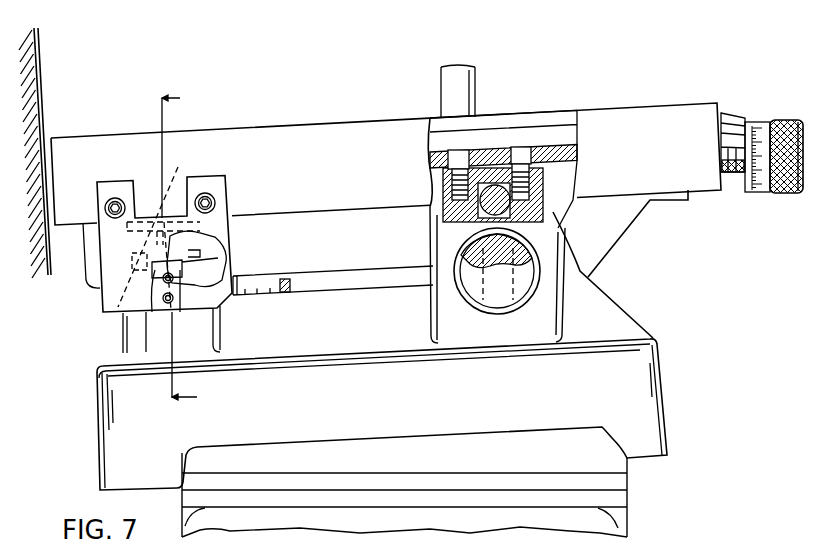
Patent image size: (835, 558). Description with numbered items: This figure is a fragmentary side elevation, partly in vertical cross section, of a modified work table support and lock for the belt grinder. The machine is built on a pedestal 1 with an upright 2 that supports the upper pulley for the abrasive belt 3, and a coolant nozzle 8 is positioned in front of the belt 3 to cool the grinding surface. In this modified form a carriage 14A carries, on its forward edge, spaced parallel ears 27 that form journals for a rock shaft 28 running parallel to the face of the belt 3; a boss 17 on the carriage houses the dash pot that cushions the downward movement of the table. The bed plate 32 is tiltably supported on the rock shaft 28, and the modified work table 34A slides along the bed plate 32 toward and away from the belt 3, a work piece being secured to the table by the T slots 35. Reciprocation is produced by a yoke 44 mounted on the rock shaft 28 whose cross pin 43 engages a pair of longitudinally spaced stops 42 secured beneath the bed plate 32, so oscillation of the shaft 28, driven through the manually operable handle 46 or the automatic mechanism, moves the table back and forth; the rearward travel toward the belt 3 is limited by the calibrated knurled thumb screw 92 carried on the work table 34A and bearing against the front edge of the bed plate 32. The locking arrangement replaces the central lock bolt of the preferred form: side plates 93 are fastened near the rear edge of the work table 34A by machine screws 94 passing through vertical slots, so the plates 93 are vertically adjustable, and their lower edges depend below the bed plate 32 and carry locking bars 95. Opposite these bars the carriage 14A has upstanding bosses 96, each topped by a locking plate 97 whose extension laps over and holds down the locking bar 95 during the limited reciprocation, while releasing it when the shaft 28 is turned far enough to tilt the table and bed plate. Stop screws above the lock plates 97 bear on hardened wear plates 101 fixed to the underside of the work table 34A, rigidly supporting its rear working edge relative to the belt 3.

The pedestal 1 is at (618, 523).
The upright 2 is at (30, 107).
The abrasive belt 3 is at (40, 72).
The nozzle 8 is at (189, 250).
The modified carriage 14A is at (638, 352).
The boss 17 is at (284, 286).
The ears 27 is at (473, 327).
The rock shaft 28 is at (470, 278).
The bed plate 32 is at (652, 200).
The modified work table 34A is at (313, 127).
The T slots 35 is at (437, 123).
The stops 42 is at (555, 195).
The cross pin 43 is at (498, 160).
The yoke 44 is at (473, 225).
The manually operable handle 46 is at (448, 78).
The calibrated knurled thumb screw 92 is at (777, 119).
The side plates 93 is at (108, 259).
The machine screws 94 is at (214, 195).
The locking bars 95 is at (164, 308).
The upstanding bosses 96 is at (205, 329).
The locking plate 97 is at (208, 262).
The hardened wear plates 101 is at (168, 226).